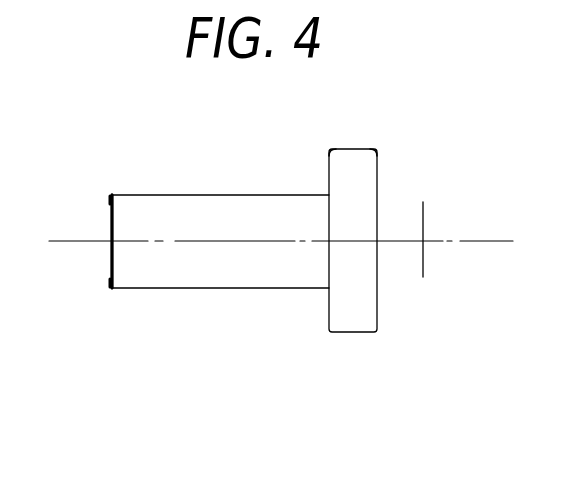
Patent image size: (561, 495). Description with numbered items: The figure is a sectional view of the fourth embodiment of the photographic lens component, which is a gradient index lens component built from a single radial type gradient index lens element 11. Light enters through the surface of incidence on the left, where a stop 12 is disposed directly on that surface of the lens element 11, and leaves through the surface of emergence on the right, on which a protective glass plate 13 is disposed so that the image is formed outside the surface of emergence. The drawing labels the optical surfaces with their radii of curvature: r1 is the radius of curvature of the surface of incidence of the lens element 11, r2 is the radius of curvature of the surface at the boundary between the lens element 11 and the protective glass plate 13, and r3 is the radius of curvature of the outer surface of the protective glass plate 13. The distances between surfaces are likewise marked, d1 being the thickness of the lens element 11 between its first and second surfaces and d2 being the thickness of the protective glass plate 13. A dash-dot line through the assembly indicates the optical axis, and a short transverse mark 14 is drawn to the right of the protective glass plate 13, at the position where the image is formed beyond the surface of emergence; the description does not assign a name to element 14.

The radial type gradient index lens element 11 is at (250, 288).
The stop 12 is at (108, 284).
The protective glass plate 13 is at (357, 332).
The reference plane 14 is at (425, 266).
The radius of curvature r1 is at (108, 207).
The radius of curvature r2 is at (326, 152).
The radius of curvature r3 is at (380, 152).
The distance between surfaces d1 is at (190, 241).
The distance between surfaces d2 is at (350, 241).